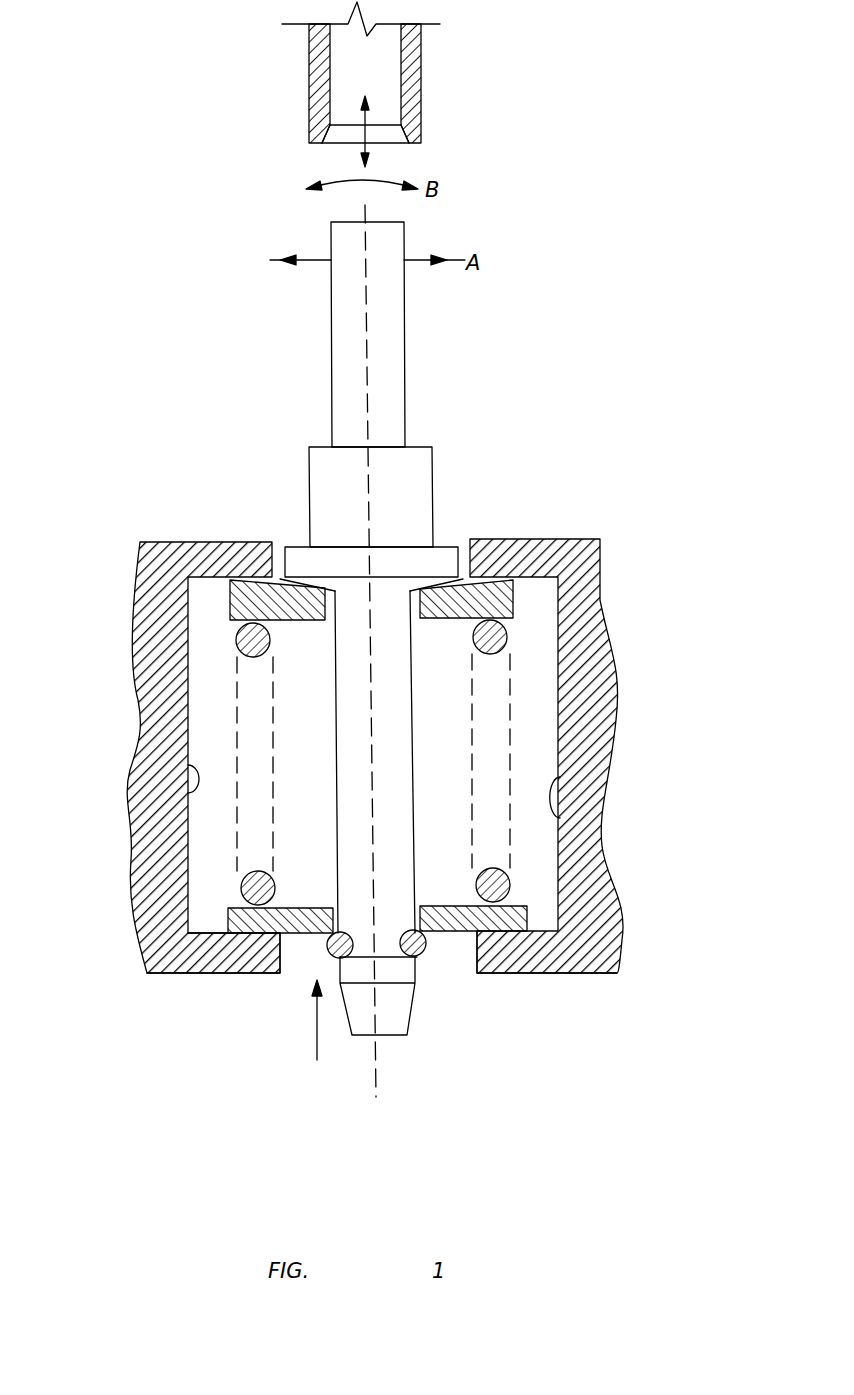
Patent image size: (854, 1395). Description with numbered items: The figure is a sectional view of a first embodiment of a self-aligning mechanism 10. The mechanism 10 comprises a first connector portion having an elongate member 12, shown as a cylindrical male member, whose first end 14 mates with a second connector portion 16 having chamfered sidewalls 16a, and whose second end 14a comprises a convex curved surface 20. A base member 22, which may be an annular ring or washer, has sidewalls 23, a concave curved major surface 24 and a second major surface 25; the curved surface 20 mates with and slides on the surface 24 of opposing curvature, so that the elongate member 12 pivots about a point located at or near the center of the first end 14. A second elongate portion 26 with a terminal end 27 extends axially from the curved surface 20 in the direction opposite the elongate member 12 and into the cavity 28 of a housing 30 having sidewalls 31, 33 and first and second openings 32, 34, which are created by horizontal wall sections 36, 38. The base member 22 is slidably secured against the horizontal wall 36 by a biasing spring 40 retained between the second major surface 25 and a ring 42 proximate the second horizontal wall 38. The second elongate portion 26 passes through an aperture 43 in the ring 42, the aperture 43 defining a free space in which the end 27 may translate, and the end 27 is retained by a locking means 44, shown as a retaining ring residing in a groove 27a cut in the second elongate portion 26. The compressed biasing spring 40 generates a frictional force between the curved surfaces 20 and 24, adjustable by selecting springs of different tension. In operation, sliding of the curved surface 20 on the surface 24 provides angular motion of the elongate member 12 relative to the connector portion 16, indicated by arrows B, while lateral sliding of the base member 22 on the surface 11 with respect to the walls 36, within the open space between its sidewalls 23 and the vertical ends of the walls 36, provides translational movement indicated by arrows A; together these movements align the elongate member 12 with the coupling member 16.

The self-aligning mechanism 10 is at (660, 436).
The surface 11 is at (239, 575).
The elongate member 12 is at (405, 325).
The first end 14 is at (382, 221).
The second end 14a is at (360, 587).
The second connector portion 16 is at (421, 85).
The chamfered sidewalls 16a is at (321, 140).
The curved surface 20 is at (397, 593).
The base member 22 is at (518, 600).
The sidewalls 23 is at (220, 602).
The curved major surface 24 is at (464, 577).
The second major surface 25 is at (233, 627).
The second elongate portion 26 is at (413, 727).
The terminal end 27 is at (352, 1040).
The groove 27a is at (328, 955).
The cavity 28 is at (318, 809).
The housing 30 is at (132, 603).
The sidewall 31 is at (188, 768).
The first opening 32 is at (279, 563).
The sidewall 33 is at (560, 780).
The second opening 34 is at (317, 1052).
The horizontal wall section 36 is at (182, 541).
The horizontal wall section 38 is at (213, 972).
The biasing spring 40 is at (507, 638).
The ring 42 is at (445, 935).
The aperture 43 is at (420, 903).
The locking means 44 is at (428, 957).